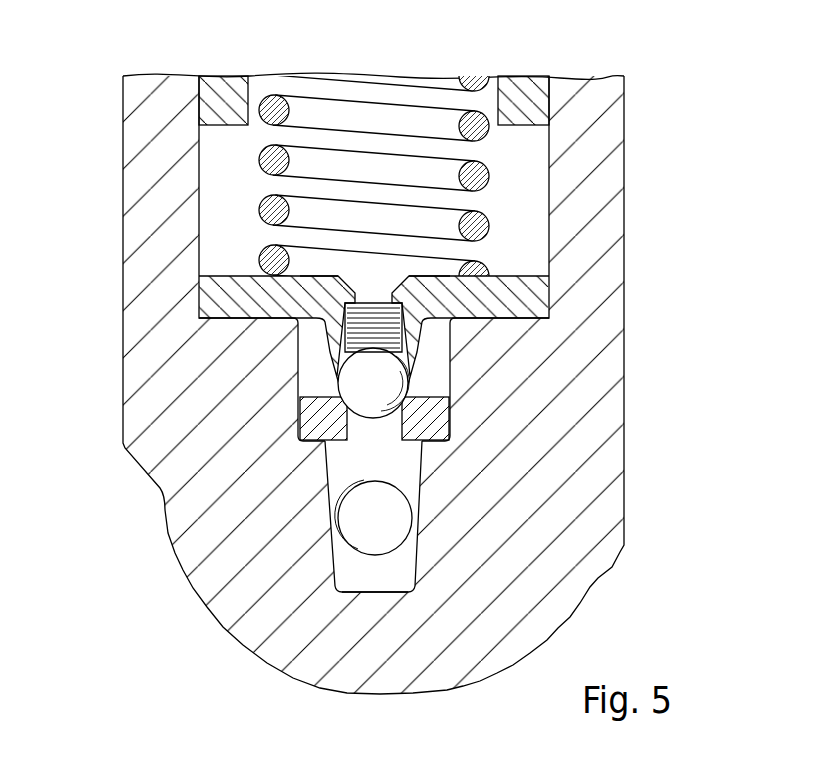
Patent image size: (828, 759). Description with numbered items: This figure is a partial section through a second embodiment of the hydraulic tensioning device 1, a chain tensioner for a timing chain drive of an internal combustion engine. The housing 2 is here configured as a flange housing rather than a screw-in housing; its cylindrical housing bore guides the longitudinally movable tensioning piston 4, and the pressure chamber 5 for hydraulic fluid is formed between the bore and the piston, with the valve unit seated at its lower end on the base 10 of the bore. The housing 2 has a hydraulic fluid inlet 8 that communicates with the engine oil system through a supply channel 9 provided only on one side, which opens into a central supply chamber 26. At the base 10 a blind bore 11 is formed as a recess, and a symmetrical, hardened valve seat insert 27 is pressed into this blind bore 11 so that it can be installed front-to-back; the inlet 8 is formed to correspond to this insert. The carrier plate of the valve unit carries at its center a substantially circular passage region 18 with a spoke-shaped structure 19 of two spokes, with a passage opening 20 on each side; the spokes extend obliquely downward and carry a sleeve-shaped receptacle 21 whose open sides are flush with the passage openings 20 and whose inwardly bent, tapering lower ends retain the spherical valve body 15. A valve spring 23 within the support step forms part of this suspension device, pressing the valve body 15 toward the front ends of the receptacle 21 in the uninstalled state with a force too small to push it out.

The tensioning device 1 is at (372, 347).
The housing 2 is at (612, 117).
The tensioning piston 4 is at (523, 86).
The pressure chamber 5 is at (232, 187).
The hydraulic fluid inlet 8 is at (386, 435).
The supply channel 9 is at (408, 518).
The base 10 is at (318, 429).
The blind bore 11 is at (446, 352).
The valve body 15 is at (360, 372).
The passage region 18 is at (333, 270).
The spoke-shaped structure 19 is at (425, 277).
The passage opening 20 is at (380, 292).
The sleeve-shaped receptacle 21 is at (310, 353).
The valve spring 23 is at (372, 300).
The central supply chamber 26 is at (356, 577).
The valve seat insert 27 is at (440, 418).